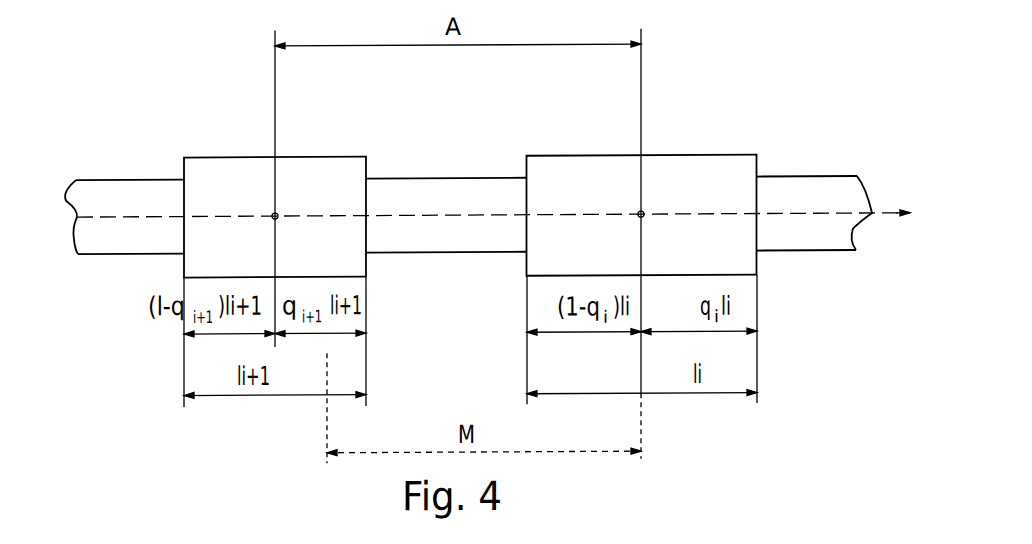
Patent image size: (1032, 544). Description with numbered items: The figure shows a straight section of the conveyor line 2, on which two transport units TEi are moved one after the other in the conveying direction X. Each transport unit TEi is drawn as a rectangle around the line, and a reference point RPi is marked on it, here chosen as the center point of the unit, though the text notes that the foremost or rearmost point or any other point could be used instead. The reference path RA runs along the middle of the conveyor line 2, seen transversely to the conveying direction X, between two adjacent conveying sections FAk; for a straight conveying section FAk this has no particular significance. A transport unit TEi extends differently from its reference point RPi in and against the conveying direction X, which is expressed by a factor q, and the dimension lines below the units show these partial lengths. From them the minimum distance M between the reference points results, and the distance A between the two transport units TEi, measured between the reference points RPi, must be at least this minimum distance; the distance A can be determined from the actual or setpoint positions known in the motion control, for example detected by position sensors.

The conveyor line 2 is at (798, 218).
The reference path RA is at (103, 218).
The conveying direction X is at (896, 196).
The conveying section FAk is at (120, 181).
The transport unit TEi is at (705, 158).
The reference point RPi is at (639, 216).